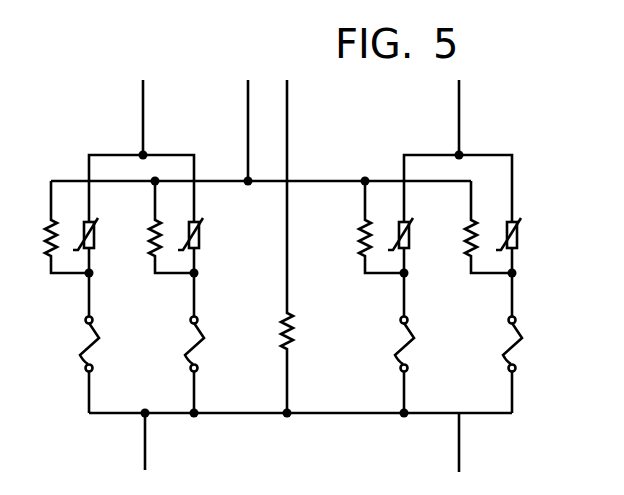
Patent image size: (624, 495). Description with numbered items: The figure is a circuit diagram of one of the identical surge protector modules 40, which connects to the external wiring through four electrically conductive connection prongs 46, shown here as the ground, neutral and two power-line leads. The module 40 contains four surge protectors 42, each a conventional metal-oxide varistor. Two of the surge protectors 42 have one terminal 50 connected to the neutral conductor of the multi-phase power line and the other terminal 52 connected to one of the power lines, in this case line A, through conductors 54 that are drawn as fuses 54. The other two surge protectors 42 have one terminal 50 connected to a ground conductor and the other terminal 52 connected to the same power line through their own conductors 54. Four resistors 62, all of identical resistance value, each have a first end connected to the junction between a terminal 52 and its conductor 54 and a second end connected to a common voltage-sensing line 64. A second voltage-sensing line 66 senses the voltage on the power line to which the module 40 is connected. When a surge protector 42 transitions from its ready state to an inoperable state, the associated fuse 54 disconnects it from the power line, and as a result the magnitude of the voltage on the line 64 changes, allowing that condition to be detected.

The surge protector module 40 is at (64, 150).
The surge protector 42 is at (98, 238).
The connection prong 46 is at (143, 122).
The terminal 50 is at (196, 202).
The terminal 52 is at (197, 294).
The conductor 54 is at (198, 343).
The resistor 62 is at (358, 235).
The voltage-sensing line 64 is at (248, 122).
The second voltage-sensing line 66 is at (290, 105).